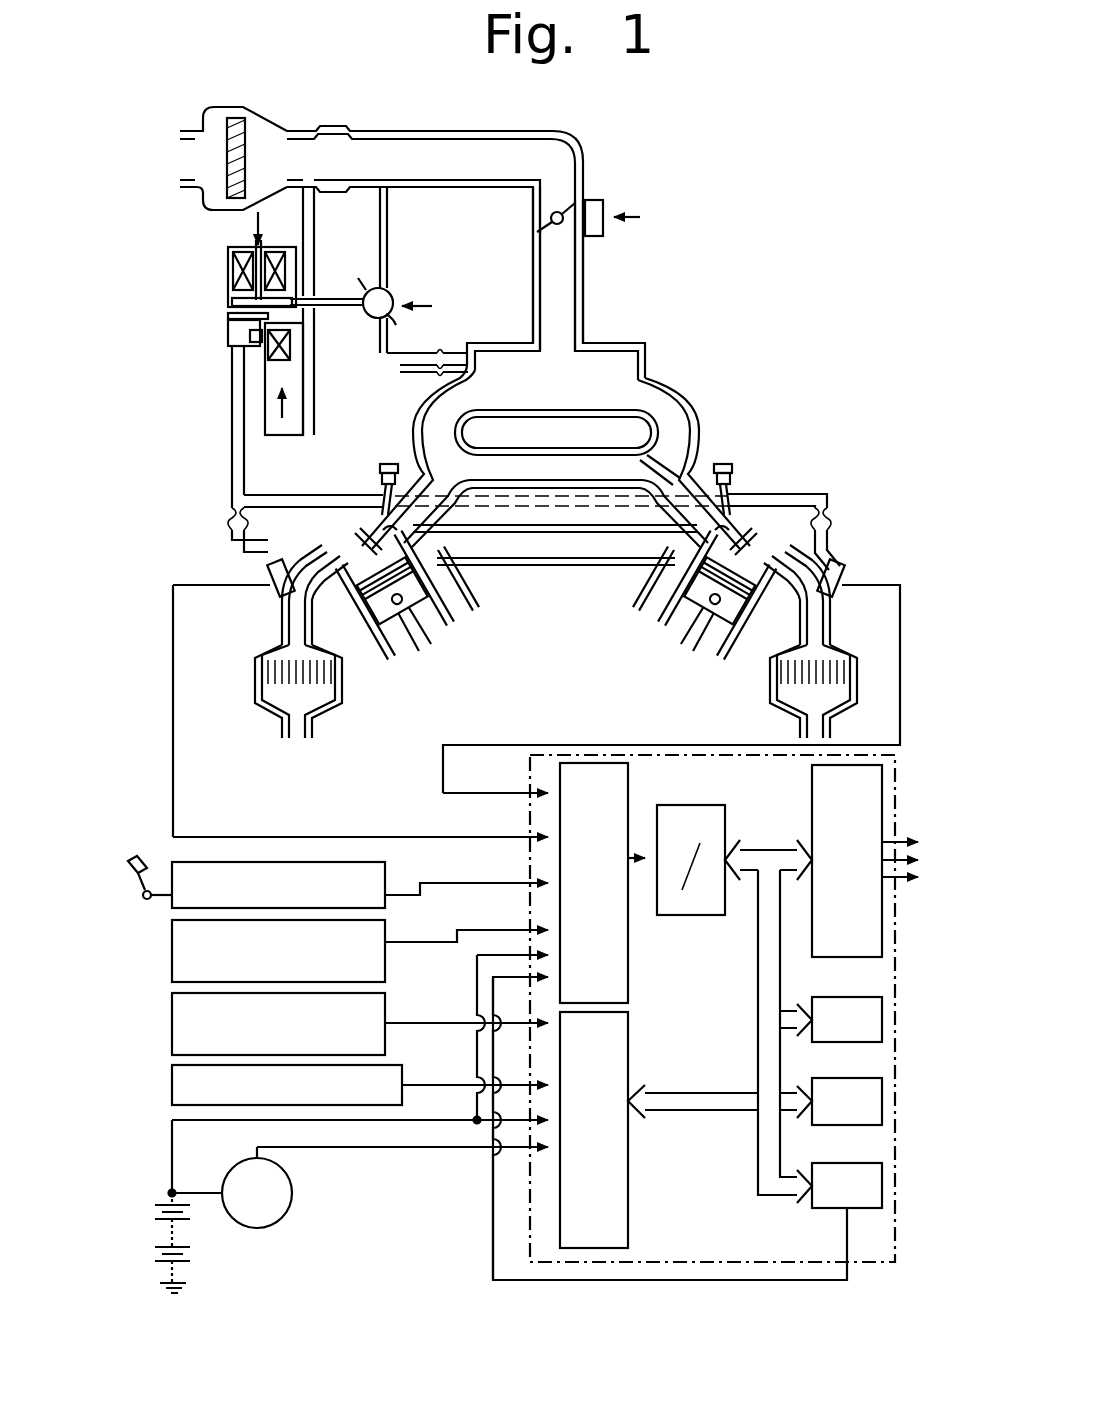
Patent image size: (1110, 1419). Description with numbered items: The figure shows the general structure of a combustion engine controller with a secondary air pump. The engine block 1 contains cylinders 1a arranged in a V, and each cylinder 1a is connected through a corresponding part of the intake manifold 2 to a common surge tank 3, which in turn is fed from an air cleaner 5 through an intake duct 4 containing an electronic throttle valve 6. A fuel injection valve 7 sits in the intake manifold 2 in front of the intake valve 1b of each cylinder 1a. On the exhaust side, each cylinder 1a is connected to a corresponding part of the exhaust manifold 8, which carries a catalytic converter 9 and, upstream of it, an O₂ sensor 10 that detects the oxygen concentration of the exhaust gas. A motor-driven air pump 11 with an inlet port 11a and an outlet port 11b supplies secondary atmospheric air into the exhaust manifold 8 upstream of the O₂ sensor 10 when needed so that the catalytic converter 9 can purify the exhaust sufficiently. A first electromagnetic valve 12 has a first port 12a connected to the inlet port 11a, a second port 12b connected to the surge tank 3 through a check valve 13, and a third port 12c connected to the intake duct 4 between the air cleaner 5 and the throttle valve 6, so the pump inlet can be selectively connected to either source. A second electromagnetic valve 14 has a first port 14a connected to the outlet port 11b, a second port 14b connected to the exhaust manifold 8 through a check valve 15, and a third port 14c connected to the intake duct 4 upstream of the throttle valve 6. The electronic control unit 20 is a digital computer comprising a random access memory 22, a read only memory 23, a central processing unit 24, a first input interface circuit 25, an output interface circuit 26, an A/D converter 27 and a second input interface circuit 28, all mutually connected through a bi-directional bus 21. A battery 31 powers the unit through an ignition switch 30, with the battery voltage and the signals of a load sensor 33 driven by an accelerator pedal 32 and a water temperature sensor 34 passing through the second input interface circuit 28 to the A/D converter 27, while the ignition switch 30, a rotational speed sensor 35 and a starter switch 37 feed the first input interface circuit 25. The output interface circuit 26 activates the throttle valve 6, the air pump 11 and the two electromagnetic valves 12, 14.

The engine block 1 is at (546, 580).
The cylinder 1a is at (428, 648).
The intake valve 1b is at (380, 520).
The intake manifold 2 is at (695, 425).
The surge tank 3 is at (615, 343).
The intake duct 4 is at (455, 196).
The air cleaner 5 is at (227, 160).
The throttle valve 6 is at (572, 212).
The fuel injection valve 7 is at (380, 468).
The exhaust manifold 8 is at (280, 622).
The catalytic converter 9 is at (340, 678).
The O₂ sensor 10 is at (268, 578).
The air pump 11 is at (228, 262).
The inlet port 11a is at (283, 240).
The outlet port 11b is at (232, 302).
The first electromagnetic valve 12 is at (392, 292).
The first port 12a is at (360, 308).
The second port 12b is at (392, 314).
The third port 12c is at (368, 292).
The check valve 13 is at (425, 368).
The second electromagnetic valve 14 is at (228, 338).
The first port 14a is at (228, 318).
The second port 14b is at (250, 345).
The third port 14c is at (250, 375).
The check valve 15 is at (228, 520).
The electronic control unit 20 is at (520, 818).
The bi-directional bus 21 is at (772, 852).
The random access memory 22 is at (862, 997).
The read only memory 23 is at (862, 1078).
The central processing unit 24 is at (862, 1163).
The first input interface circuit 25 is at (628, 1178).
The output interface circuit 26 is at (812, 787).
The A/D converter 27 is at (690, 805).
The second input interface circuit 28 is at (628, 958).
The ignition switch 30 is at (292, 1195).
The battery 31 is at (165, 1192).
The accelerator pedal 32 is at (145, 900).
The load sensor 33 is at (387, 866).
The water temperature sensor 34 is at (387, 925).
The rotational speed sensor 35 is at (387, 995).
The starter switch 37 is at (404, 1070).